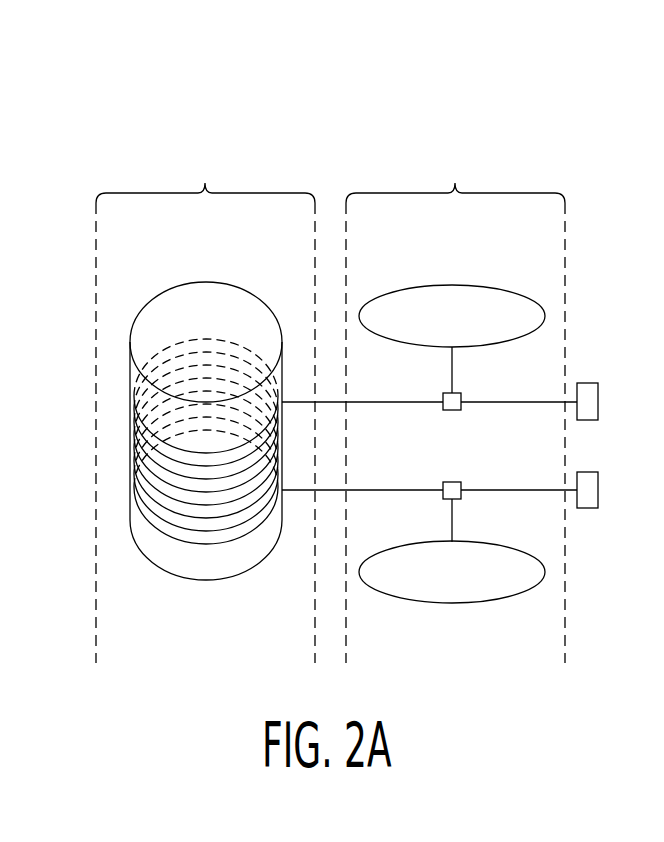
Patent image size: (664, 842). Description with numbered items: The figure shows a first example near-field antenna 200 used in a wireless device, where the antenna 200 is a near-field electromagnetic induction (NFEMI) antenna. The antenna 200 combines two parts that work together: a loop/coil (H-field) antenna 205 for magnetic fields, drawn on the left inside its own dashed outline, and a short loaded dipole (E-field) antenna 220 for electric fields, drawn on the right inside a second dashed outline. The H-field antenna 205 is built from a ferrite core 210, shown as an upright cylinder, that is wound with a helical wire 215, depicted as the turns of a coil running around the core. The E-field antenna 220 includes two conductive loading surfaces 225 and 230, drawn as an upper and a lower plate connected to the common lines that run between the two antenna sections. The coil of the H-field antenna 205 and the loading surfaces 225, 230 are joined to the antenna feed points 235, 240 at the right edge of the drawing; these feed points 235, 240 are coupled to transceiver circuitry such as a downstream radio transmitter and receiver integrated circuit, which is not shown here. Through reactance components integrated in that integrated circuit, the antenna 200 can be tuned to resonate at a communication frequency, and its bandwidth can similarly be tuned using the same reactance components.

The near-field antenna 200 is at (136, 146).
The loop/coil (H-field) antenna 205 is at (205, 407).
The ferrite core 210 is at (210, 283).
The helical wire 215 is at (182, 543).
The short loaded dipole (E-field) antenna 220 is at (455, 406).
The conductive loading surface 225 is at (477, 285).
The conductive loading surface 230 is at (463, 603).
The feed point 235 is at (590, 383).
The feed point 240 is at (587, 508).